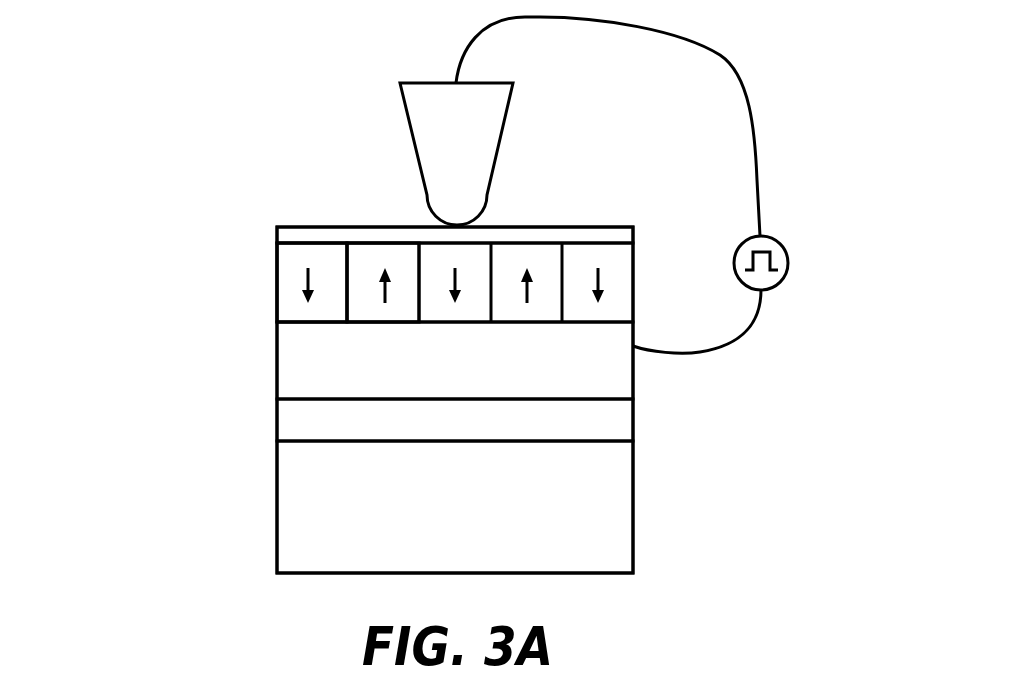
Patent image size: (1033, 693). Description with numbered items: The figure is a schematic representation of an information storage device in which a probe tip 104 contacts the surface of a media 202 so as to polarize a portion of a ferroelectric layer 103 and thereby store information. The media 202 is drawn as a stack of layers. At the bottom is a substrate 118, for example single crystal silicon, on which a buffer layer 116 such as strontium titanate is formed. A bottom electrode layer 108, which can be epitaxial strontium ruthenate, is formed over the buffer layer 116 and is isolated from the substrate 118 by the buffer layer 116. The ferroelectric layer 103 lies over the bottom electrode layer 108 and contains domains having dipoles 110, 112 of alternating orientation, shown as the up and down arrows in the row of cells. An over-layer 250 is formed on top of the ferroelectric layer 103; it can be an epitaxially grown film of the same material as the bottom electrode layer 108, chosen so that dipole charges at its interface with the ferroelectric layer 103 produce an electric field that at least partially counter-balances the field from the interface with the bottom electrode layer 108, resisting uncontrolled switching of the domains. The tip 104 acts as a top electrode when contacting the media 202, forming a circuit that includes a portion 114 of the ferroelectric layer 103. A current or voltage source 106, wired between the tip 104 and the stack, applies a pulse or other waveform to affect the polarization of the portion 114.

The ferroelectric layer 103 is at (277, 205).
The over-layer 250 is at (385, 233).
The portion of the ferroelectric layer 114 is at (618, 262).
The dipole 110 is at (277, 298).
The dipole 112 is at (402, 310).
The bottom electrode layer 108 is at (615, 372).
The buffer layer 116 is at (288, 417).
The substrate 118 is at (605, 473).
The probe tip 104 is at (478, 155).
The current or voltage source 106 is at (789, 255).
The media 202 is at (118, 339).